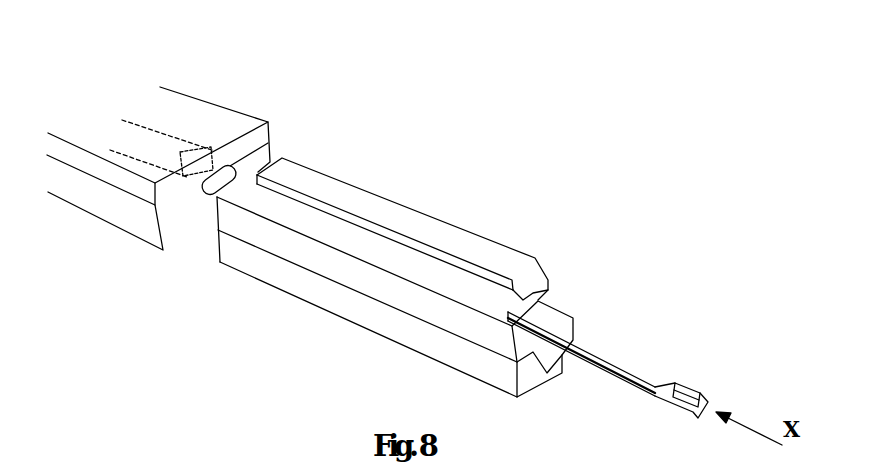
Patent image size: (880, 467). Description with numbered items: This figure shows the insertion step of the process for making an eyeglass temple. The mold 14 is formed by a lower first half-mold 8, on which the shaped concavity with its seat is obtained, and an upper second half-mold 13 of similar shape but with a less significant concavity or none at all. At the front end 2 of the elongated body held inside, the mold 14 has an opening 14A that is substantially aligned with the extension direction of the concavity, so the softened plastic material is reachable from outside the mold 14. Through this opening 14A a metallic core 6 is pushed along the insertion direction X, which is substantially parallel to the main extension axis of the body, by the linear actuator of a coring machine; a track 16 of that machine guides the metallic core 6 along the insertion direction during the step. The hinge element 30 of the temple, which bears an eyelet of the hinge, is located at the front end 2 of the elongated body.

The mold 14 is at (125, 70).
The front end 2 is at (222, 176).
The second half-mold 13 is at (243, 123).
The opening 14A is at (236, 162).
The first half-mold 8 is at (130, 225).
The track 16 is at (550, 333).
The metallic core 6 is at (607, 363).
The hinge element 30 is at (687, 393).